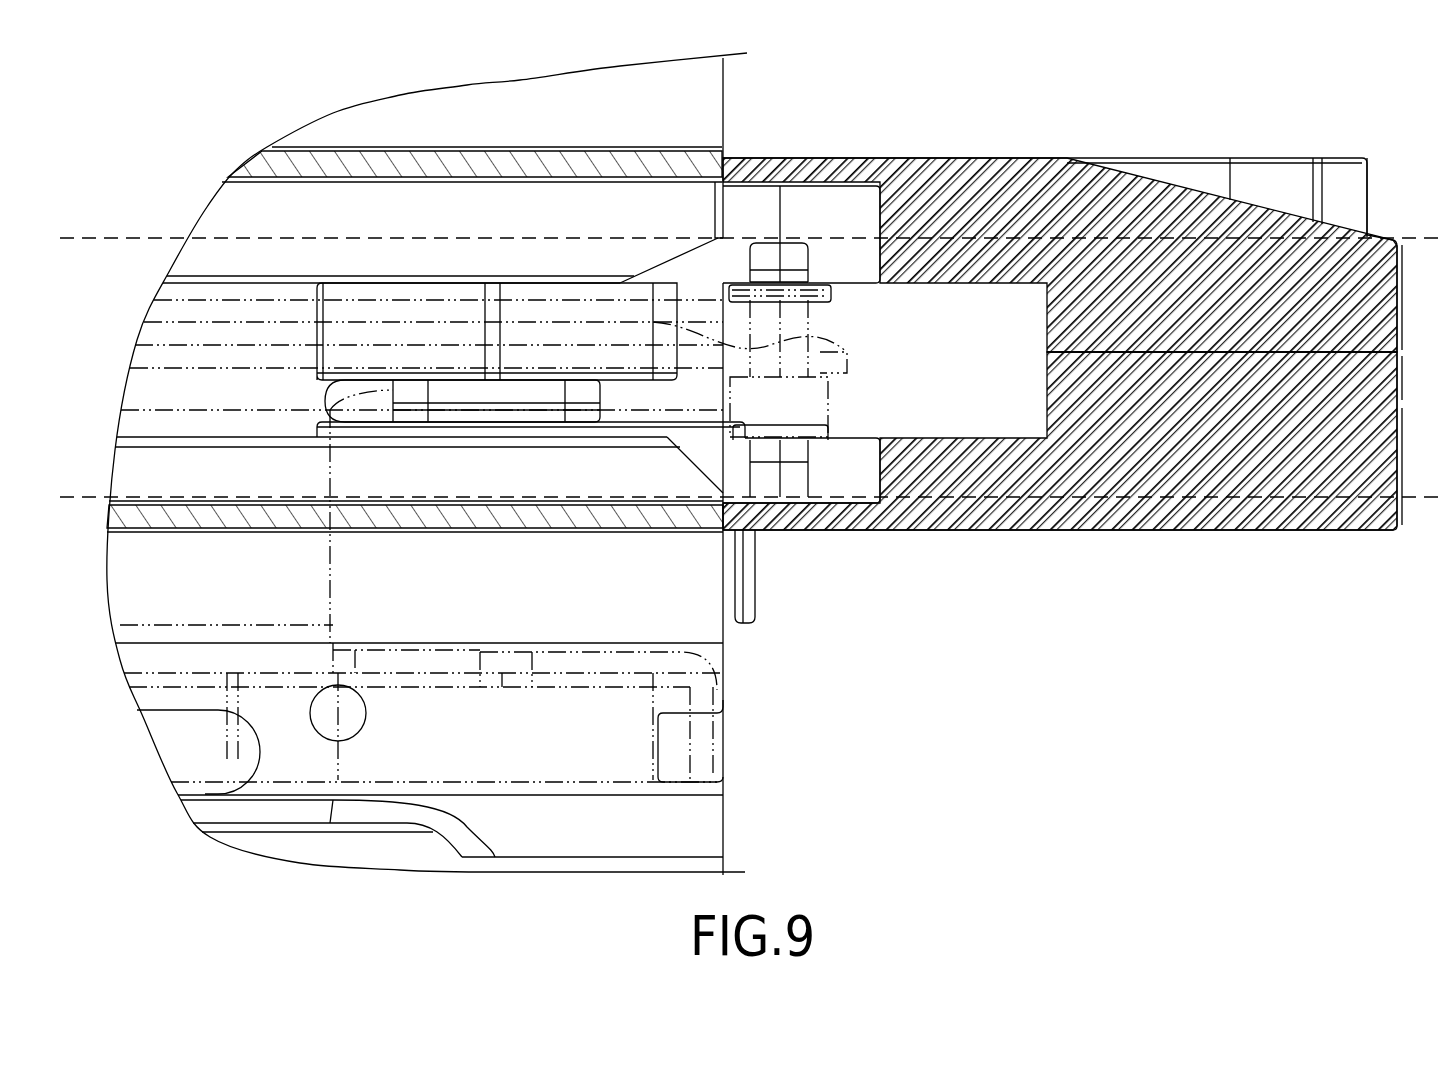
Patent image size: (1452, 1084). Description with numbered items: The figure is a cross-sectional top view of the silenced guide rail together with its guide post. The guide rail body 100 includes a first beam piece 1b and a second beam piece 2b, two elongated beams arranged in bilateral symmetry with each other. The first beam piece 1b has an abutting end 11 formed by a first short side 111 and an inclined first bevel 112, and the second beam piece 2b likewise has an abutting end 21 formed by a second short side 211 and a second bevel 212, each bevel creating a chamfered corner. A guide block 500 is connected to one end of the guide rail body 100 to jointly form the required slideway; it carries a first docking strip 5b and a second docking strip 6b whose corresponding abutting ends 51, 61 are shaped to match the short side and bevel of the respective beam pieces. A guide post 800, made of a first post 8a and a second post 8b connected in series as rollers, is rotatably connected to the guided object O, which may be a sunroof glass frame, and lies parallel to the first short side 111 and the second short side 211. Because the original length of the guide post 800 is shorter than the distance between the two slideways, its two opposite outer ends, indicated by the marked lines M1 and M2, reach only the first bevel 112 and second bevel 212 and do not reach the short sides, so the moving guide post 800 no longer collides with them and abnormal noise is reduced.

The guide rail body 100 is at (746, 822).
The first beam piece 1b is at (488, 200).
The second beam piece 2b is at (428, 487).
The corresponding abutting end 51 is at (667, 260).
The corresponding abutting end 61 is at (700, 470).
The guided object O is at (256, 282).
The marked line M1 is at (1415, 237).
The marked line M2 is at (1415, 499).
The guide post 800 is at (997, 96).
The first post 8a is at (803, 263).
The second post 8b is at (860, 462).
The guide block 500 is at (1211, 551).
The first docking strip 5b is at (865, 200).
The second docking strip 6b is at (864, 493).
The abutting end 11 is at (870, 106).
The first short side 111 is at (723, 210).
The first bevel 112 is at (803, 262).
The abutting end 21 is at (870, 606).
The second short side 211 is at (750, 490).
The second bevel 212 is at (752, 463).